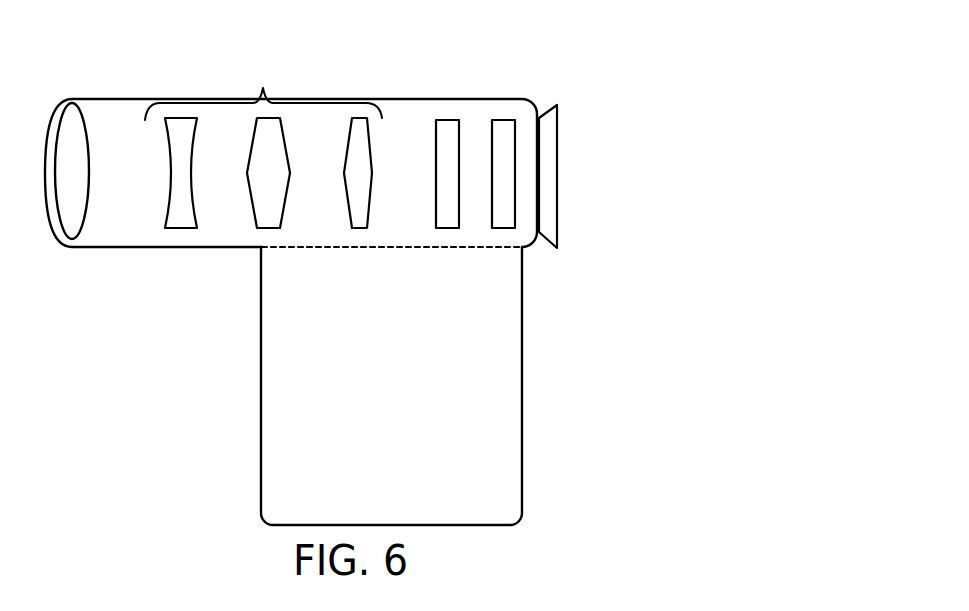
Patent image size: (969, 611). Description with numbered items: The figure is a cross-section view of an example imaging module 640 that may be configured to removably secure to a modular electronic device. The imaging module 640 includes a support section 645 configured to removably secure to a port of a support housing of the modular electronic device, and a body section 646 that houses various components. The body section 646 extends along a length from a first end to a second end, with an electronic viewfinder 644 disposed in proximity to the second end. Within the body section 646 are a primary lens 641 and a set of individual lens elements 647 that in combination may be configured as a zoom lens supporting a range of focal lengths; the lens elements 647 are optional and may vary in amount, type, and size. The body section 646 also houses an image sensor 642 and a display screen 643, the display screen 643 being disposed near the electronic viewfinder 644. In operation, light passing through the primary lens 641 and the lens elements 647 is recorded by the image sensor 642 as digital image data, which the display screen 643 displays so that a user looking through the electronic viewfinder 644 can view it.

The imaging module 640 is at (173, 58).
The primary lens 641 is at (63, 125).
The image sensor 642 is at (447, 120).
The display screen 643 is at (502, 120).
The electronic viewfinder 644 is at (558, 125).
The support section 645 is at (512, 387).
The body section 646 is at (185, 235).
The set of individual lens elements 647 is at (248, 188).